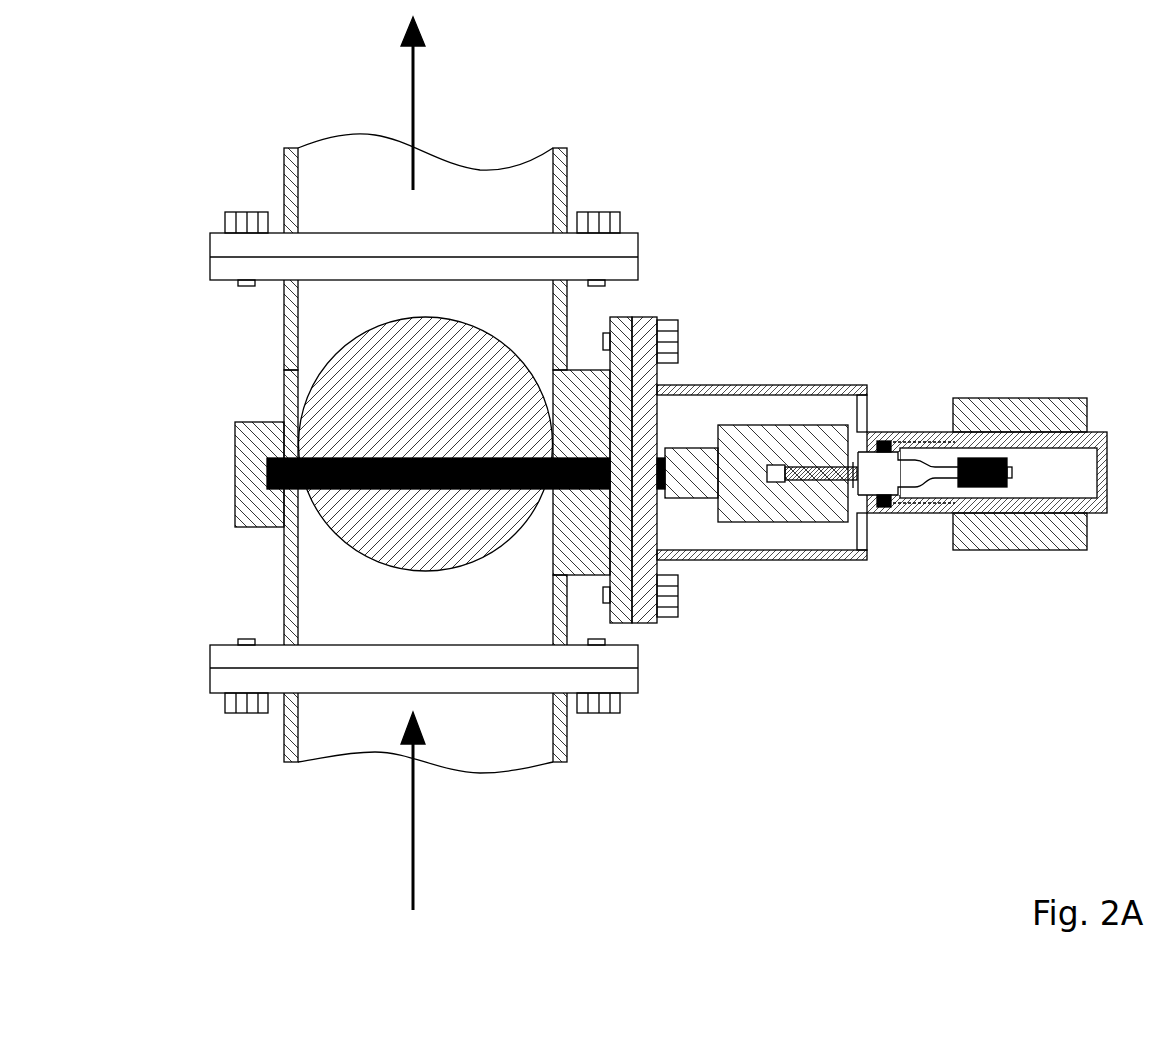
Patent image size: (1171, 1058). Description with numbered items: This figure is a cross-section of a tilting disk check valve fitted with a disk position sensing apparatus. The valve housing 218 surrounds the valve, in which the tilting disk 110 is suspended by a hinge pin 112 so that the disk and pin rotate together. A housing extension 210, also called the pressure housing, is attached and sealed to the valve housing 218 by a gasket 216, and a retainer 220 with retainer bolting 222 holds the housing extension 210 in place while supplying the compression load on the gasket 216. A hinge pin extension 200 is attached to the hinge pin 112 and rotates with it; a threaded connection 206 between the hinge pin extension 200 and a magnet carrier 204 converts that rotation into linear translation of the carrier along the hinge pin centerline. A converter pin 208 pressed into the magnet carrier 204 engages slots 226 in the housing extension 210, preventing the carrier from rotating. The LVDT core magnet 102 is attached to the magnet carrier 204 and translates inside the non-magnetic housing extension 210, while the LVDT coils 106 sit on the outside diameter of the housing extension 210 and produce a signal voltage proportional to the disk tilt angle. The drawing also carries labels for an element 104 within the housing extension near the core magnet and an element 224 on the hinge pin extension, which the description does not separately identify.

The LVDT core magnet 102 is at (980, 488).
The sensor element 104 is at (1075, 485).
The LVDT coils 106 is at (1007, 397).
The tilting disk 110 is at (439, 407).
The hinge pin 112 is at (303, 490).
The hinge pin extension 200 is at (805, 425).
The magnet carrier 204 is at (915, 480).
The threaded connection 206 is at (853, 488).
The converter pin 208 is at (897, 441).
The housing extension 210 is at (748, 385).
The gasket 216 is at (632, 623).
The valve housing 218 is at (288, 325).
The retainer 220 is at (645, 316).
The retainer bolting 222 is at (672, 320).
The bolt head 224 is at (773, 482).
The slots 226 is at (918, 440).